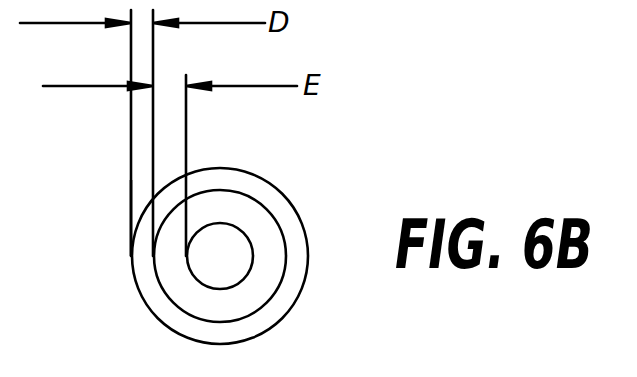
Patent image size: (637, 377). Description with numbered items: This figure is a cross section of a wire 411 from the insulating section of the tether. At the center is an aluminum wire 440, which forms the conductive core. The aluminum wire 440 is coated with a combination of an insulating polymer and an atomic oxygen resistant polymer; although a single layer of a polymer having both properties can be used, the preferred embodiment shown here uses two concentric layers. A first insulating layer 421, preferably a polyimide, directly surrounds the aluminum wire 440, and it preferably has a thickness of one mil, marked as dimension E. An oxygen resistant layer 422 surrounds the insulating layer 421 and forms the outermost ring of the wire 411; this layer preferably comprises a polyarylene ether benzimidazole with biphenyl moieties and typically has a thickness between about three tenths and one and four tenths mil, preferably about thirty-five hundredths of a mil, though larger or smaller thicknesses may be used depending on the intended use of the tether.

The wire 411 is at (95, 229).
The insulating layer 421 is at (268, 276).
The oxygen resistant layer 422 is at (155, 292).
The aluminum wire 440 is at (240, 253).